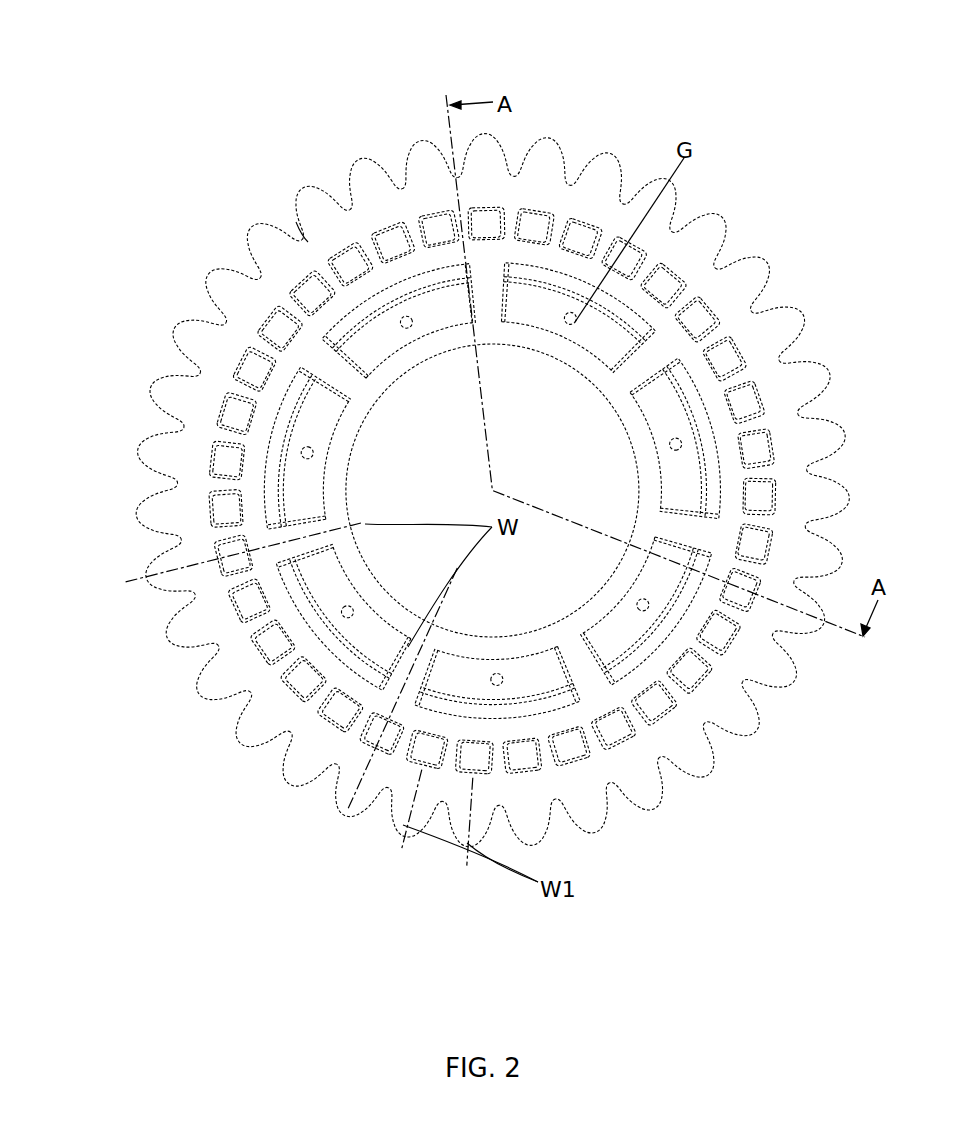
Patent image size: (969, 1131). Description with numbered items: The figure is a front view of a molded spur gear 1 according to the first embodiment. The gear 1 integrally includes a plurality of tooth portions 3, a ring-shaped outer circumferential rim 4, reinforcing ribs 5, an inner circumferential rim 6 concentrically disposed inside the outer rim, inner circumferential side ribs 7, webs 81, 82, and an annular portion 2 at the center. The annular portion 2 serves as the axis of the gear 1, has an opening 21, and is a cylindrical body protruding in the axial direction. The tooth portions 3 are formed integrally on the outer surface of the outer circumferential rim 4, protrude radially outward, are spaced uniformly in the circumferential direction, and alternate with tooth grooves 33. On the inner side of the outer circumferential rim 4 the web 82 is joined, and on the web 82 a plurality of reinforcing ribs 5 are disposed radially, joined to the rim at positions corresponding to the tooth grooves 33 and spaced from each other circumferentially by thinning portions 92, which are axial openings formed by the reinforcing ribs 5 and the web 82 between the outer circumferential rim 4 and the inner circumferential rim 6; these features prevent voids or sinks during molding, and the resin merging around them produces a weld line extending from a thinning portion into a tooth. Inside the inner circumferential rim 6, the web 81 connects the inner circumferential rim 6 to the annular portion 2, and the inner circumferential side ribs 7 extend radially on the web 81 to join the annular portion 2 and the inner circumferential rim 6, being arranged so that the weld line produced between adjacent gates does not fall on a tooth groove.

The gear 1 is at (494, 36).
The annular portion 2 is at (351, 567).
The opening 21 is at (548, 625).
The tooth portions 3 is at (298, 197).
The tooth grooves 33 is at (303, 240).
The outer circumferential rim 4 is at (216, 404).
The reinforcing ribs 5 is at (223, 432).
The inner circumferential rim 6 is at (257, 423).
The inner circumferential side ribs 7 is at (327, 360).
The web 81 is at (345, 605).
The web 82 is at (264, 363).
The thinning portions 92 is at (246, 376).